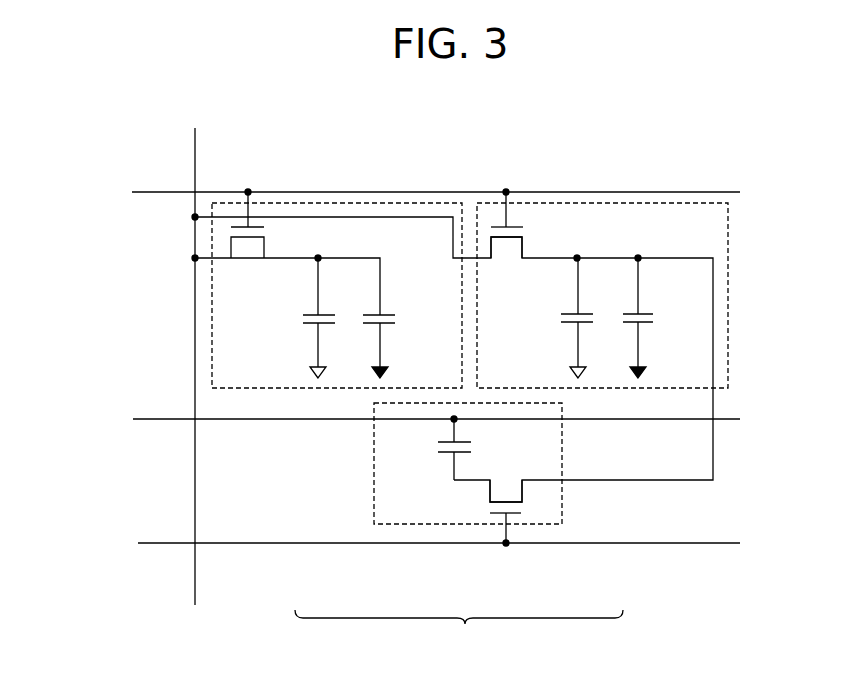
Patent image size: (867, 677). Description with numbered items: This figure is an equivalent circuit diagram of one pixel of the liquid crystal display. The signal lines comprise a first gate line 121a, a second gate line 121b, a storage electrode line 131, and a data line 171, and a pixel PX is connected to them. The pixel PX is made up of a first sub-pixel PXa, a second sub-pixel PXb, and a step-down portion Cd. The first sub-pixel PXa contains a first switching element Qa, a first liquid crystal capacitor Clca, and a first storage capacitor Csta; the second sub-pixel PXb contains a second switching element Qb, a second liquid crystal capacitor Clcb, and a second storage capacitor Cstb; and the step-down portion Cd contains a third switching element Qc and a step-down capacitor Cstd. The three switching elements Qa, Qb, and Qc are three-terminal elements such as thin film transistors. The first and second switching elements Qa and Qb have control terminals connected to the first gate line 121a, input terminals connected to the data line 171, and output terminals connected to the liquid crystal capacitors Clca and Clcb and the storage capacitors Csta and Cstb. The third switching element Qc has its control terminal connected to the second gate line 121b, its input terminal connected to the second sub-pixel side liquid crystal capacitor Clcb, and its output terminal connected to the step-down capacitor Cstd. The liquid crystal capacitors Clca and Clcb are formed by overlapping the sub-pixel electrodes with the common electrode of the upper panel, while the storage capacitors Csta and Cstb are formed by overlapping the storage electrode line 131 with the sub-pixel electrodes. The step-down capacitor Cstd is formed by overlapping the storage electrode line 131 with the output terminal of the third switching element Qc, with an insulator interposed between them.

The data line 171 is at (193, 152).
The first gate line 121a is at (460, 193).
The second gate line 121b is at (463, 544).
The storage electrode line 131 is at (456, 421).
The first switching element Qa is at (507, 238).
The second switching element Qb is at (247, 238).
The third switching element Qc is at (506, 501).
The first liquid crystal capacitor Clca is at (552, 318).
The second liquid crystal capacitor Clcb is at (293, 318).
The first storage capacitor Csta is at (664, 318).
The second storage capacitor Cstb is at (405, 343).
The step-down capacitor Cstd is at (428, 449).
The first sub-pixel PXa is at (625, 388).
The second sub-pixel PXb is at (293, 388).
The step-down portion Cd is at (460, 524).
The pixel PX is at (459, 631).